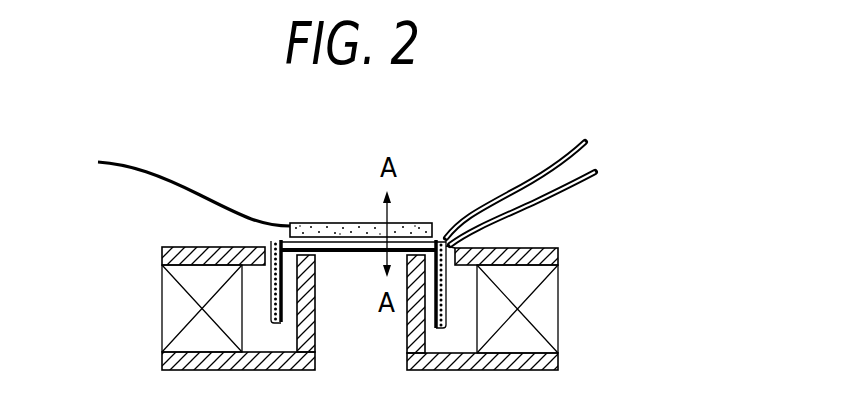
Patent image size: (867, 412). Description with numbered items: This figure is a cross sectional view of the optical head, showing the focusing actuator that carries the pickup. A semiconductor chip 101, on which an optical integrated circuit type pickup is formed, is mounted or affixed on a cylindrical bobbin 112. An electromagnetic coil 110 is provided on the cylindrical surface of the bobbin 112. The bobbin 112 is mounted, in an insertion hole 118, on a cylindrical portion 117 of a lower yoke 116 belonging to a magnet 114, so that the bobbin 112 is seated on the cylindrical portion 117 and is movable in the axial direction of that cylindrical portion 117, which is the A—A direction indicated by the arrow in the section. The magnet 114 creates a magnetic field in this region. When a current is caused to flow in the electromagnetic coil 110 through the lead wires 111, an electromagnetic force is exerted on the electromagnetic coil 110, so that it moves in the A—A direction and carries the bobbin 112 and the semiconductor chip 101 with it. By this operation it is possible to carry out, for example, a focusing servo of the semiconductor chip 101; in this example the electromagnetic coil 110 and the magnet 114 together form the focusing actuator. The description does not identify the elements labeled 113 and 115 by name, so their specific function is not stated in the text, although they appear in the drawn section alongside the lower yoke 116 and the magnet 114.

The semiconductor chip 101 is at (361, 192).
The electromagnetic coil 110 is at (285, 260).
The lead wires 111 is at (605, 180).
The cylindrical bobbin 112 is at (447, 231).
The diaphragm 113 is at (194, 179).
The magnet 114 is at (392, 309).
The upper yoke plate 115 is at (397, 258).
The lower yoke 116 is at (391, 354).
The cylindrical portion 117 is at (361, 324).
The insertion hole 118 is at (450, 247).